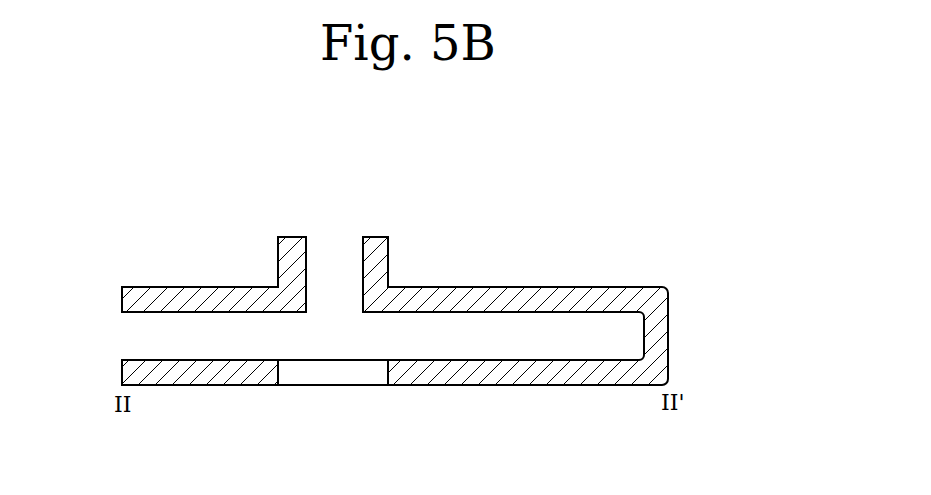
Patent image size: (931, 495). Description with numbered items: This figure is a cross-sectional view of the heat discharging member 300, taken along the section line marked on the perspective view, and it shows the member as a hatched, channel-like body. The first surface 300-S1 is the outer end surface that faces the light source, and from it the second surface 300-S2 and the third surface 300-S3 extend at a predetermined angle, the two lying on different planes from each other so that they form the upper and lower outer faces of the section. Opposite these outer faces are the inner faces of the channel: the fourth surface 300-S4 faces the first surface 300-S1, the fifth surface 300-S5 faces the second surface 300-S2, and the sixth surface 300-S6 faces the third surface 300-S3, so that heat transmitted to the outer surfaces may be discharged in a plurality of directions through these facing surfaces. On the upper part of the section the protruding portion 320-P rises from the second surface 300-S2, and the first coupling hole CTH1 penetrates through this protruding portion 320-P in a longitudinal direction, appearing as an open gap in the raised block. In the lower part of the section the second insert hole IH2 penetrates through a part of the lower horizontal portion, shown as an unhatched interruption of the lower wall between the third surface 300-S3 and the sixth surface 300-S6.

The heat discharging member 300 is at (654, 192).
The first surface 300-S1 is at (668, 336).
The second surface 300-S2 is at (558, 287).
The third surface 300-S3 is at (541, 385).
The fourth surface 300-S4 is at (644, 336).
The fifth surface 300-S5 is at (208, 312).
The sixth surface 300-S6 is at (209, 360).
The protruding portion 320-P is at (381, 249).
The first coupling hole CTH1 is at (321, 258).
The second insert hole IH2 is at (279, 370).